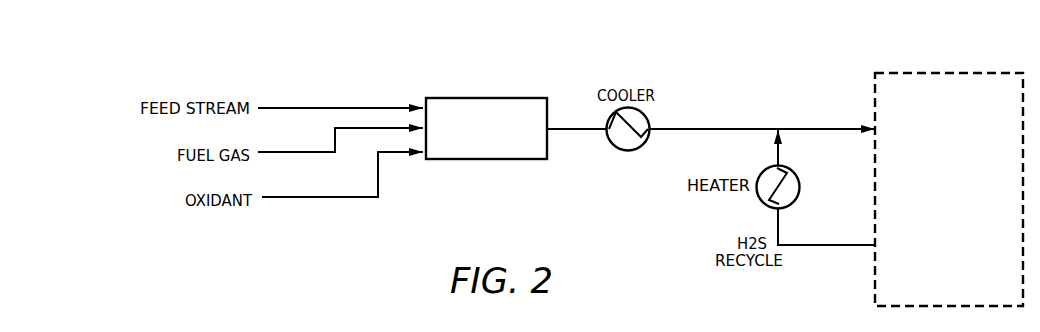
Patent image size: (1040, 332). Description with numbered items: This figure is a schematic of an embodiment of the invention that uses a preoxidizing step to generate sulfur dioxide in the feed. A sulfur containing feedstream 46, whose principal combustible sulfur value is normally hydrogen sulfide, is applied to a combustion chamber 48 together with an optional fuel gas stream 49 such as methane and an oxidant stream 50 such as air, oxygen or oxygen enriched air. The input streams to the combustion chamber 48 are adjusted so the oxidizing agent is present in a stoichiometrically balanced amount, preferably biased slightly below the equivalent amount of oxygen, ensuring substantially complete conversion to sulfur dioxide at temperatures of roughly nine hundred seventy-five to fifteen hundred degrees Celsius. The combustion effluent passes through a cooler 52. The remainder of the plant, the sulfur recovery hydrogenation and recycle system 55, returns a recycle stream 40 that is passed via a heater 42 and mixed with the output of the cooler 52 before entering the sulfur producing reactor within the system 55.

The sulfur containing feedstream 46 is at (365, 105).
The fuel gas stream 49 is at (322, 153).
The oxidant stream 50 is at (343, 197).
The combustion chamber 48 is at (488, 160).
The cooler 52 is at (622, 151).
The heater 42 is at (795, 197).
The recycle stream 40 is at (817, 245).
The sulfur recovery hydrogenation and recycle system 55 is at (948, 73).